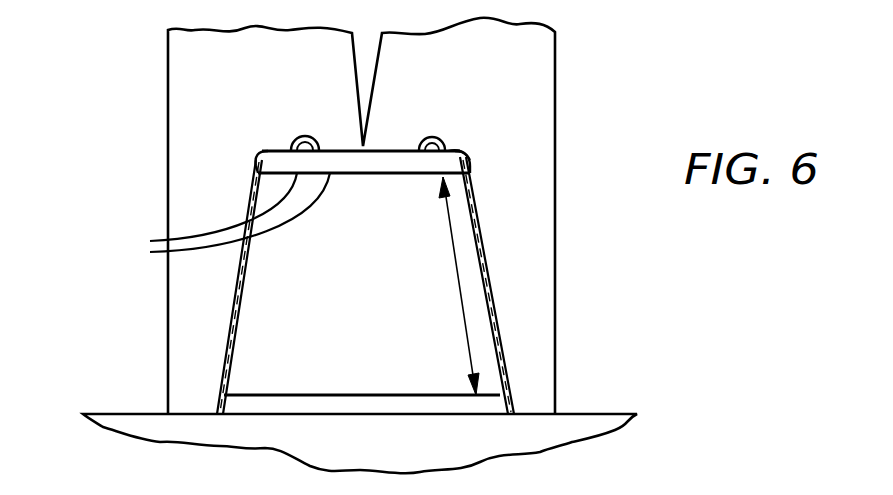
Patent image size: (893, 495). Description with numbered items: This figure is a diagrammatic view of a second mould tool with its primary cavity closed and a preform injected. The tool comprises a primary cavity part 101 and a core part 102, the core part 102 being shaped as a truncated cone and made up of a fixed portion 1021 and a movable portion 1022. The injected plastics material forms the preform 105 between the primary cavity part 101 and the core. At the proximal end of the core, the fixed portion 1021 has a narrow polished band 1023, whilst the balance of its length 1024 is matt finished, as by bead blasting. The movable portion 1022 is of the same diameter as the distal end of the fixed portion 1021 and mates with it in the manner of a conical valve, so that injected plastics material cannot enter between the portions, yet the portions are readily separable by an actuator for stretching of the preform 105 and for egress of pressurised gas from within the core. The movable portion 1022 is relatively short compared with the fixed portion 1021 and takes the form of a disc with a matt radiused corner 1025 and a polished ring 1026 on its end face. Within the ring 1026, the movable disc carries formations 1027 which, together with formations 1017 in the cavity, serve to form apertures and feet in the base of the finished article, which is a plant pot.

The primary cavity part 101 is at (533, 247).
The core part 102 is at (373, 350).
The preform 105 is at (490, 283).
The formations in the cavity 1017 is at (330, 147).
The fixed portion 1021 is at (307, 323).
The movable portion 1022 is at (290, 162).
The narrow polished band 1023 is at (277, 407).
The balance of its length 1024 is at (458, 282).
The matt radiused corner 1025 is at (470, 173).
The polished ring 1026 is at (453, 147).
The formations 1027 is at (209, 221).